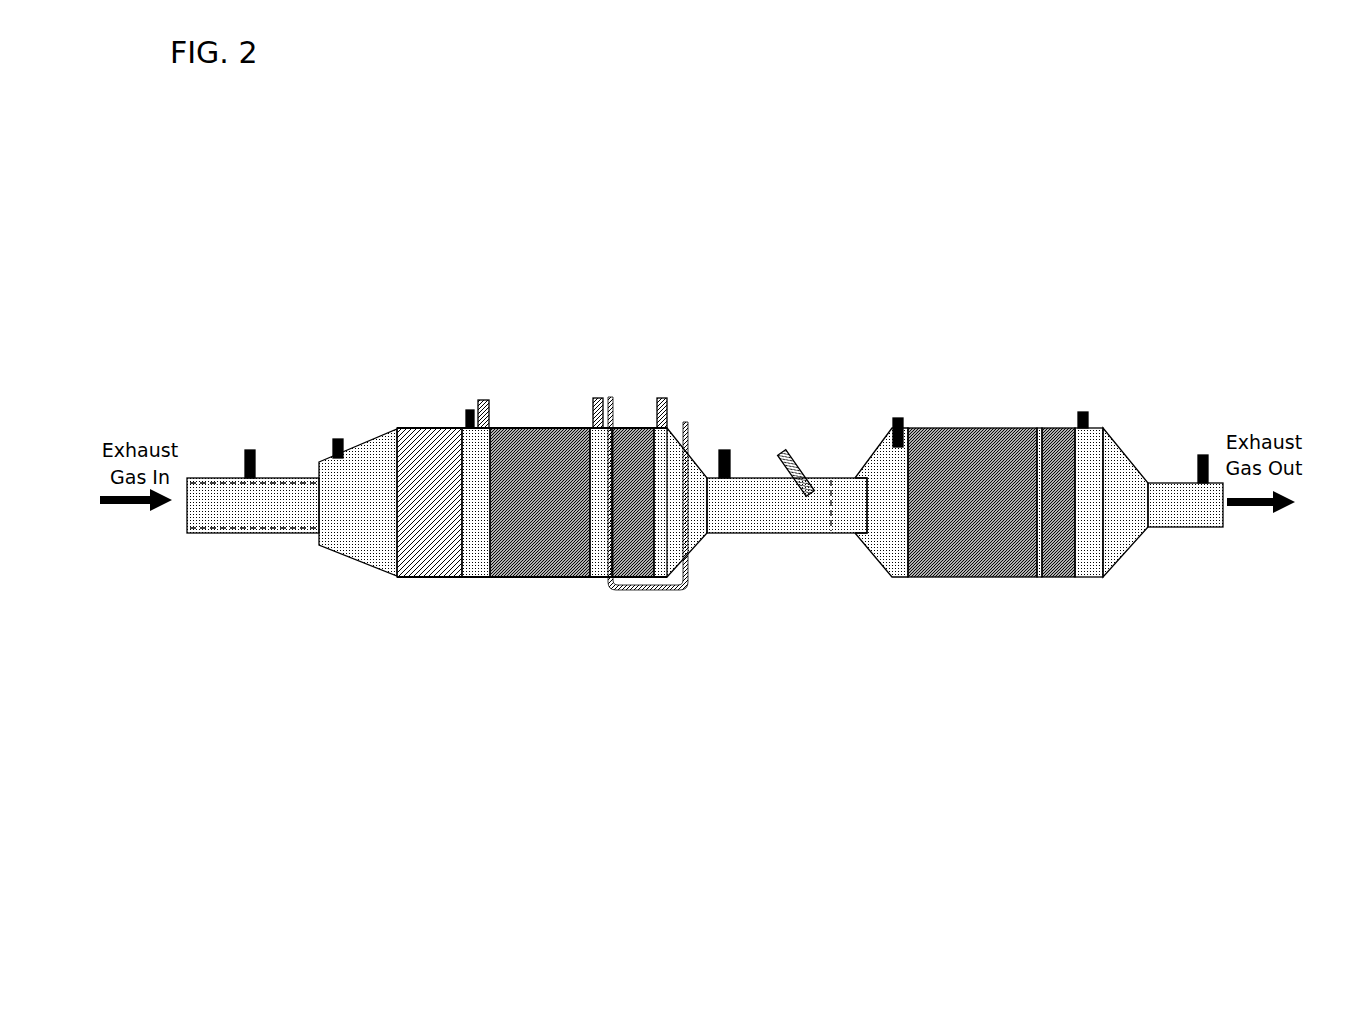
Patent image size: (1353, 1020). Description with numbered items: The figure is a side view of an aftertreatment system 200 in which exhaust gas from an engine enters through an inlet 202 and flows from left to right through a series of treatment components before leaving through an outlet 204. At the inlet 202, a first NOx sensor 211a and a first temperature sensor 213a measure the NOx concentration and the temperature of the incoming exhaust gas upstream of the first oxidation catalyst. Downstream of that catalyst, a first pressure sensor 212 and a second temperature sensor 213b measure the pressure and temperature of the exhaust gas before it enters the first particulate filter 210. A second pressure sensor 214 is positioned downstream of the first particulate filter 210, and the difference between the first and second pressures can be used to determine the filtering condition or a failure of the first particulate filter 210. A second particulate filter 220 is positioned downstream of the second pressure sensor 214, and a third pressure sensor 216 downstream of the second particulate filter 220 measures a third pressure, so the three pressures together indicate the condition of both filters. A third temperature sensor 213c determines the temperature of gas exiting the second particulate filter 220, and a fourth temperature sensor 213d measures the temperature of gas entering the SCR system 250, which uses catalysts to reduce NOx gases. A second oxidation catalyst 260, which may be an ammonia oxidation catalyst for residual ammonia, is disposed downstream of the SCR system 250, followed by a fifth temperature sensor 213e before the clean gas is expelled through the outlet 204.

The aftertreatment system 200 is at (776, 208).
The inlet 202 is at (228, 528).
The outlet 204 is at (1187, 522).
The first particulate filter 210 is at (535, 570).
The first NOx sensor 211a is at (247, 448).
The first pressure sensor 212 is at (482, 405).
The first temperature sensor 213a is at (335, 438).
The second temperature sensor 213b is at (463, 417).
The third temperature sensor 213c is at (729, 450).
The fourth temperature sensor 213d is at (897, 417).
The fifth temperature sensor 213e is at (1083, 412).
The second pressure sensor 214 is at (593, 420).
The third pressure sensor 216 is at (660, 410).
The second particulate filter 220 is at (633, 553).
The SCR system 250 is at (960, 562).
The second oxidation catalyst 260 is at (1062, 555).